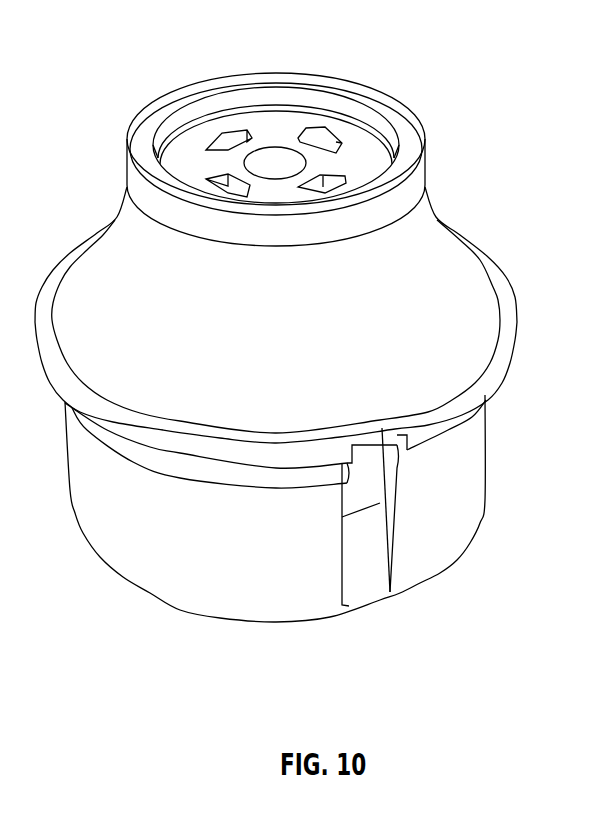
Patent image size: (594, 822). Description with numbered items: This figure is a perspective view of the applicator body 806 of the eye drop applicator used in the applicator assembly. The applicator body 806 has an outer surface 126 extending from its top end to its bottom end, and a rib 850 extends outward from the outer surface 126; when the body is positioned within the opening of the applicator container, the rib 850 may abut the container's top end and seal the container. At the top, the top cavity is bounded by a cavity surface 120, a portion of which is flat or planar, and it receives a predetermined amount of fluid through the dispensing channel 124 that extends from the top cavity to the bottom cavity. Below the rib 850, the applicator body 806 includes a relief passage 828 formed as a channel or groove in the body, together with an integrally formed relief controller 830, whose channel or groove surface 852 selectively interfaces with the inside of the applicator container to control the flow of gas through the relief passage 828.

The cavity surface 120 is at (237, 110).
The dispensing channel 124 is at (286, 158).
The outer surface 126 is at (417, 218).
The applicator body 806 is at (442, 46).
The relief passage 828 is at (371, 483).
The relief controller 830 is at (343, 517).
The rib 850 is at (502, 290).
The channel or groove surface 852 is at (355, 570).